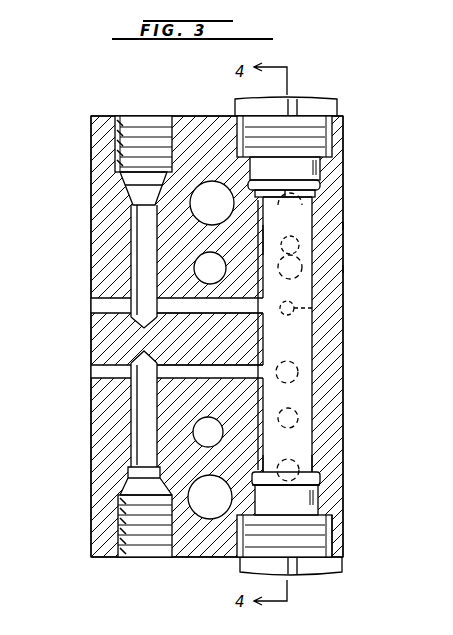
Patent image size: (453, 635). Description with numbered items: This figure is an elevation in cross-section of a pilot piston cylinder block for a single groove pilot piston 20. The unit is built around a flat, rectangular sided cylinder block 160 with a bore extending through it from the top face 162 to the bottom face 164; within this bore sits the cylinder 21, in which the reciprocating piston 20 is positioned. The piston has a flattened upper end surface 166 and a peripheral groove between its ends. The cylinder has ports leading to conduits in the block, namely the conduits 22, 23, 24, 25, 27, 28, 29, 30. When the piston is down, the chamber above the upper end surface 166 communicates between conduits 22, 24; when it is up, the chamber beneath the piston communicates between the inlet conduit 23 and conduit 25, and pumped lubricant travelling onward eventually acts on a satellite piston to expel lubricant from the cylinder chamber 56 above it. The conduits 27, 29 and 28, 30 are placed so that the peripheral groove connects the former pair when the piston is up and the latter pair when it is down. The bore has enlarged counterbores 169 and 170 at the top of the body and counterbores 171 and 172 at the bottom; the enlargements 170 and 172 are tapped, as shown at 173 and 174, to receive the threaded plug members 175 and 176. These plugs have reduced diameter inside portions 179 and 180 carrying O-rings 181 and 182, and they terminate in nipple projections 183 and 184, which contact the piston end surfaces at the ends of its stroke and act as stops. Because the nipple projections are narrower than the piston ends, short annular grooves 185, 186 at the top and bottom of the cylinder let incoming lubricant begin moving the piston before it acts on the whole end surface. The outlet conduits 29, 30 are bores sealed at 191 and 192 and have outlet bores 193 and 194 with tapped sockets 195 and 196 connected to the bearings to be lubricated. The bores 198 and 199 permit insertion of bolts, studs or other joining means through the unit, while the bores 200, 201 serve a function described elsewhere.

The pilot piston 20 is at (316, 336).
The cylinder 21 is at (312, 248).
The conduit 22 is at (345, 227).
The inlet conduit 23 is at (345, 431).
The conduit 24 is at (340, 269).
The conduit 25 is at (345, 398).
The conduit 27 is at (345, 312).
The conduit 28 is at (345, 356).
The outlet conduit 29 is at (171, 308).
The outlet conduit 30 is at (258, 319).
The cylinder chamber 56 is at (287, 218).
The cylinder block 160 is at (91, 143).
The top face 162 is at (210, 101).
The bottom face 164 is at (107, 558).
The upper end surface 166 is at (318, 288).
The counterbore 169 is at (322, 197).
The counterbore 170 is at (323, 162).
The counterbore 171 is at (326, 477).
The counterbore 172 is at (322, 512).
The tapped portion 173 is at (318, 137).
The tapped portion 174 is at (340, 548).
The threaded plug member 175 is at (320, 98).
The threaded plug member 176 is at (340, 535).
The reduced diameter inside portion 179 is at (322, 191).
The reduced diameter inside portion 180 is at (322, 496).
The O-ring 181 is at (322, 181).
The O-ring 182 is at (326, 483).
The nipple projection 183 is at (262, 233).
The nipple projection 184 is at (320, 456).
The annular groove 185 is at (265, 205).
The annular groove 186 is at (261, 464).
The seal 191 is at (91, 300).
The seal 192 is at (91, 372).
The outlet bore 193 is at (131, 245).
The outlet bore 194 is at (131, 440).
The tapped socket 195 is at (136, 102).
The tapped socket 196 is at (128, 560).
The bore 198 is at (222, 181).
The bore 199 is at (206, 521).
The bore 200 is at (208, 253).
The bore 201 is at (207, 417).